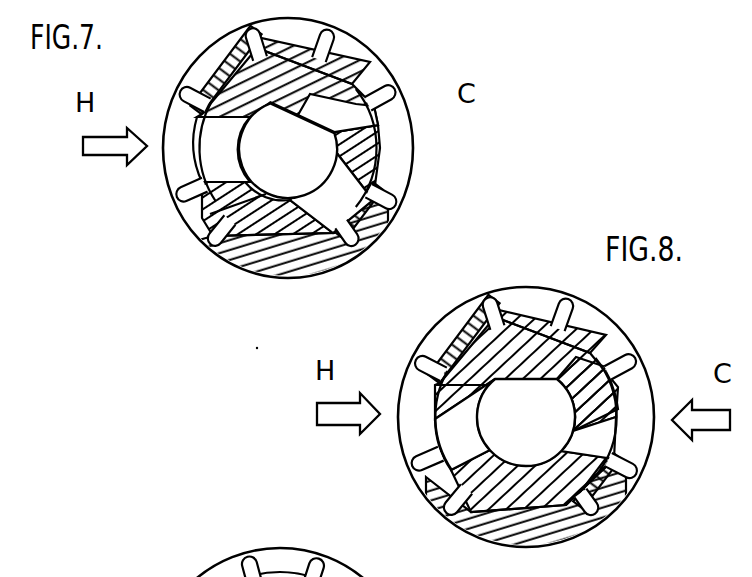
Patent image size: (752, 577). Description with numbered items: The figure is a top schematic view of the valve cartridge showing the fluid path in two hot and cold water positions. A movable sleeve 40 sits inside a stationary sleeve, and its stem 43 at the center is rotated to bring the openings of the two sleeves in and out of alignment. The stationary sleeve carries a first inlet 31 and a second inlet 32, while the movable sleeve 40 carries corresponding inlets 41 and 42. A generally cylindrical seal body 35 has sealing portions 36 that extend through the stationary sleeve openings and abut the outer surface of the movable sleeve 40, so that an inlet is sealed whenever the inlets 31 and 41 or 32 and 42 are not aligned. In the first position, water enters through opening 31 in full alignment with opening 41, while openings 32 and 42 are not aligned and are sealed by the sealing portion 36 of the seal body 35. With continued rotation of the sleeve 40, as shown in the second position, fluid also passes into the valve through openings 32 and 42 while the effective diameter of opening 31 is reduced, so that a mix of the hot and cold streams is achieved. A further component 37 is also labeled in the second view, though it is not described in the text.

In FIG. 7, the inlet of the stationary sleeve 31 is at (168, 172).
In FIG. 8, the inlet of the stationary sleeve 31 is at (420, 437).
In FIG. 7, the inlet of the stationary sleeve 32 is at (402, 163).
In FIG. 8, the inlet of the stationary sleeve 32 is at (640, 396).
In FIG. 7, the cylindrical seal body 35 is at (384, 62).
In FIG. 8, the cylindrical seal body 35 is at (616, 334).
In FIG. 7, the sealing portion 36 is at (372, 110).
In FIG. 8, the sealing portion 36 is at (588, 368).
In FIG. 8, the lower key strip 37 is at (608, 513).
In FIG. 7, the movable sleeve 40 is at (341, 96).
In FIG. 8, the movable sleeve 40 is at (523, 363).
In FIG. 7, the inlet of the movable sleeve 41 is at (230, 161).
In FIG. 8, the inlet of the movable sleeve 41 is at (470, 460).
In FIG. 7, the inlet of the movable sleeve 42 is at (322, 216).
In FIG. 8, the inlet of the movable sleeve 42 is at (598, 457).
In FIG. 7, the stem 43 is at (307, 161).
In FIG. 8, the stem 43 is at (543, 433).